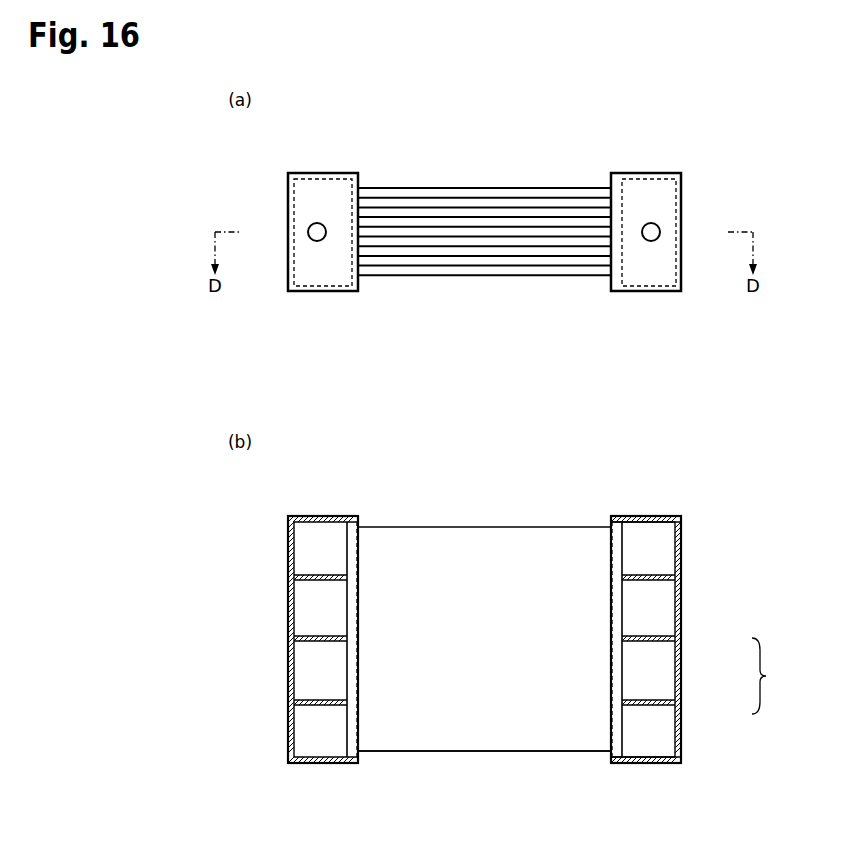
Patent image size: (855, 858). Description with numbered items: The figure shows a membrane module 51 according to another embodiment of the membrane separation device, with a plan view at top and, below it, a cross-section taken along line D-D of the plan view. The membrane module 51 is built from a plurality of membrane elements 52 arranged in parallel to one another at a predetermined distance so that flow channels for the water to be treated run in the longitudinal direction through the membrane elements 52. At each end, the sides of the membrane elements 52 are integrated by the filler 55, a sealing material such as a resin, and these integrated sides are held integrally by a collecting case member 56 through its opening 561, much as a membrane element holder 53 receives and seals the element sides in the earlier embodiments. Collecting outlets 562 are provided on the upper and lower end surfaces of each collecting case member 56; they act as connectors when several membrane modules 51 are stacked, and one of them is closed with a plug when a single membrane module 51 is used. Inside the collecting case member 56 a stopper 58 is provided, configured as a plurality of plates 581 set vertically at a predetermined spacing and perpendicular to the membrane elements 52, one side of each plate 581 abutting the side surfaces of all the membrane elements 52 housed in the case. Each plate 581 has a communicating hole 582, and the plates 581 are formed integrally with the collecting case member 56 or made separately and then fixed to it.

The membrane module 51 is at (507, 170).
The membrane elements 52 is at (445, 275).
The membrane element holder 53 is at (624, 596).
The filler 55 is at (612, 753).
The collecting case member 56 is at (636, 173).
The stopper 58 is at (770, 676).
The opening 561 is at (611, 517).
The collecting outlets 562 is at (658, 231).
The plates 581 is at (668, 640).
The communicating hole 582 is at (649, 706).